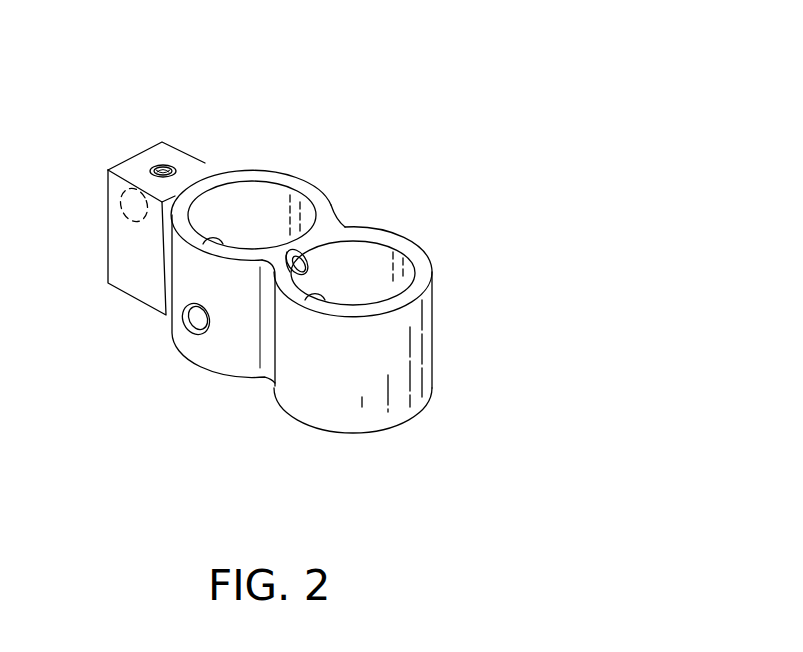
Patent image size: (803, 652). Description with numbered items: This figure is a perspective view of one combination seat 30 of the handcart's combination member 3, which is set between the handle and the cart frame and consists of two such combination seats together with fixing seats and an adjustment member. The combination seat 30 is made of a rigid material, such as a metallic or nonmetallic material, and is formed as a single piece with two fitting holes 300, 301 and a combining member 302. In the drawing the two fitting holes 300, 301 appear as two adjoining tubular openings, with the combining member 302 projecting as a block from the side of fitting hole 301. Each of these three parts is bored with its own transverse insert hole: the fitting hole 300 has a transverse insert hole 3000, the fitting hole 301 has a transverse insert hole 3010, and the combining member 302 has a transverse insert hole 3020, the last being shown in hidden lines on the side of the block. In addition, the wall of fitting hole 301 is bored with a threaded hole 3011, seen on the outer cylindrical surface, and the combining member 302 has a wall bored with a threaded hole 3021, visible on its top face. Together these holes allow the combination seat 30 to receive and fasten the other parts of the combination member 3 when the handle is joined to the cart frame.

The combination member 3 is at (360, 62).
The combination seat 30 is at (393, 140).
The fitting hole 300 is at (355, 255).
The fitting hole 301 is at (272, 207).
The combining member 302 is at (201, 160).
The transverse insert hole 3000 is at (317, 297).
The transverse insert hole 3010 is at (207, 237).
The threaded hole 3011 is at (190, 327).
The transverse insert hole 3020 is at (120, 210).
The threaded hole 3021 is at (155, 164).